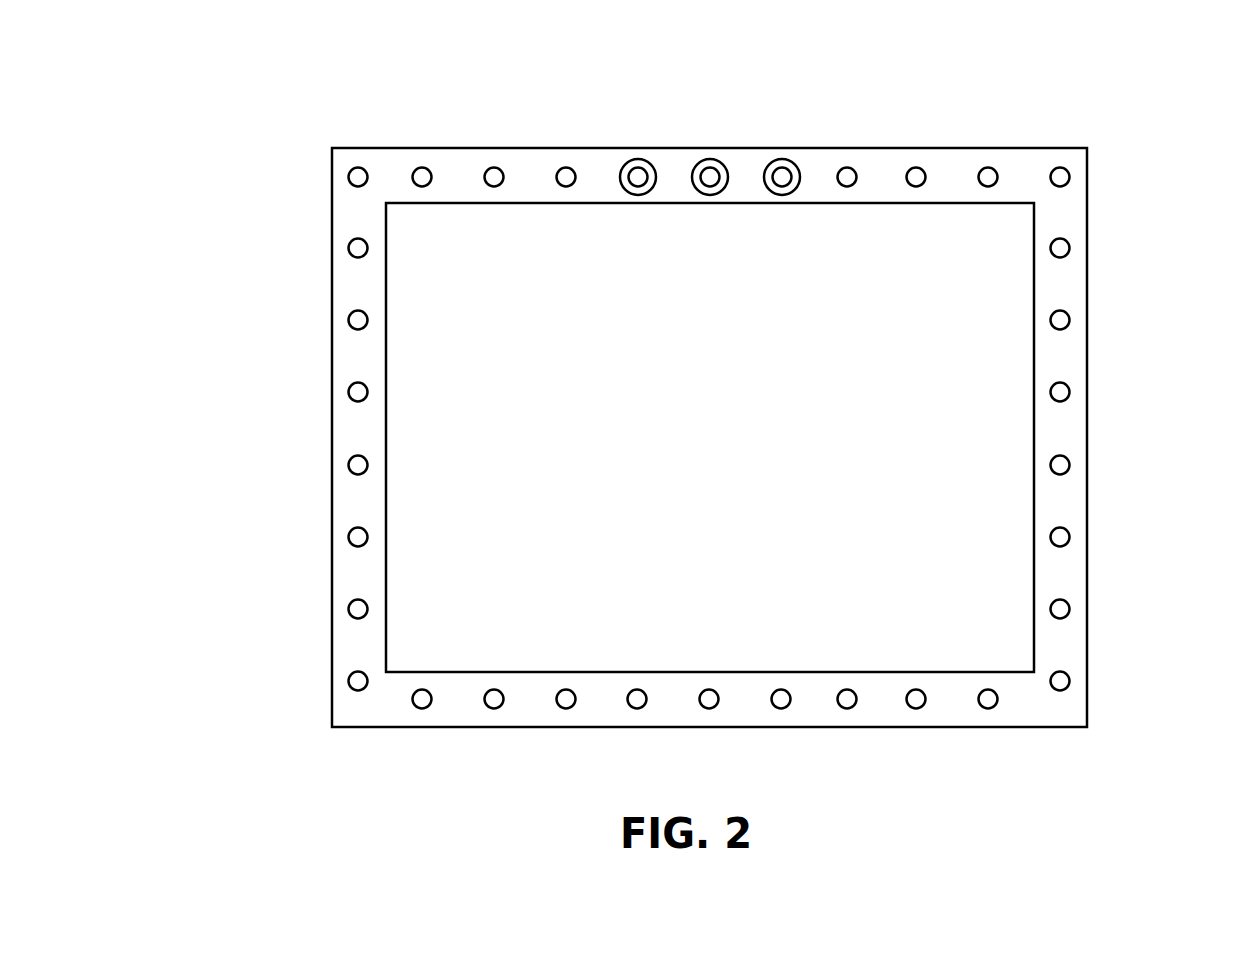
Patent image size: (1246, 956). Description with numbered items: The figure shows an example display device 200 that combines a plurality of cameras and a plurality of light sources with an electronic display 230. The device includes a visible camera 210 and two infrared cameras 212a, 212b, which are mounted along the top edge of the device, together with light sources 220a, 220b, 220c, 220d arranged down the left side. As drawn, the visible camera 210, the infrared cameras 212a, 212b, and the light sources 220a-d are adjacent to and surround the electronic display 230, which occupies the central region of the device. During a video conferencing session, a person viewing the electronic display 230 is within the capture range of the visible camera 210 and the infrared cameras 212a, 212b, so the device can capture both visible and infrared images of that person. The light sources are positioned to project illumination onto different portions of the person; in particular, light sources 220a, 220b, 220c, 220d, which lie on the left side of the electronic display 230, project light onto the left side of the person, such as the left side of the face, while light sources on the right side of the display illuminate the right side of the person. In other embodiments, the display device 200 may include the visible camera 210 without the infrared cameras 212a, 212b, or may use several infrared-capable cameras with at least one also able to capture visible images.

The display device 200 is at (229, 54).
The visible camera 210 is at (709, 158).
The infrared camera 212a is at (638, 158).
The infrared camera 212b is at (782, 158).
The light source 220a is at (348, 248).
The light source 220b is at (348, 320).
The light source 220c is at (348, 392).
The light source 220d is at (348, 465).
The electronic display 230 is at (926, 409).